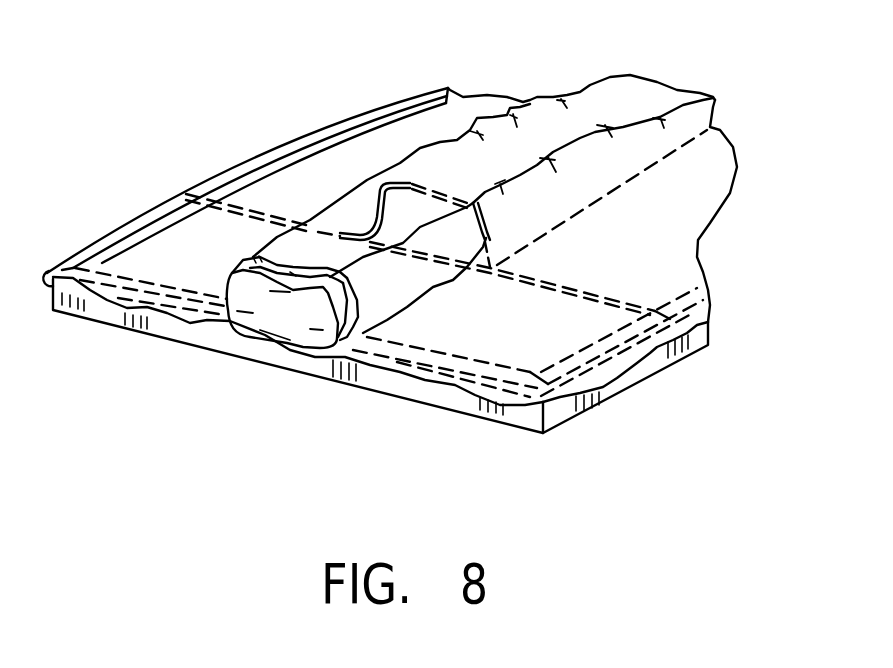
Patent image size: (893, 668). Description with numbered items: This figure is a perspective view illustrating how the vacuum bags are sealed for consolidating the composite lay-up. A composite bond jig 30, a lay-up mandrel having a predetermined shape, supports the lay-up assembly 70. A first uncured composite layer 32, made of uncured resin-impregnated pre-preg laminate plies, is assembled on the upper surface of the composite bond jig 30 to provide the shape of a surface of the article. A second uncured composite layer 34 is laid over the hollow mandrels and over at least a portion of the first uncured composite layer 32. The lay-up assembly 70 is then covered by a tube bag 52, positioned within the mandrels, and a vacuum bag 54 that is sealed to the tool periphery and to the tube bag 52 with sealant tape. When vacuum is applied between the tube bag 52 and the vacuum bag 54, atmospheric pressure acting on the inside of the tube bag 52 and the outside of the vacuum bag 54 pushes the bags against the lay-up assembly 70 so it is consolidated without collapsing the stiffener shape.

The composite bond jig 30 is at (635, 388).
The first uncured composite layer 32 is at (182, 250).
The second uncured composite layer 34 is at (597, 300).
The tube bag 52 is at (278, 323).
The vacuum bag 54 is at (475, 340).
The lay-up assembly 70 is at (313, 118).